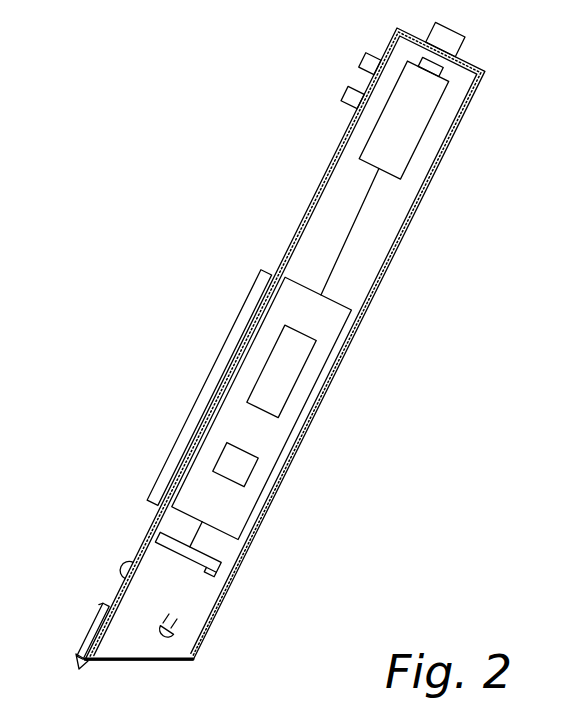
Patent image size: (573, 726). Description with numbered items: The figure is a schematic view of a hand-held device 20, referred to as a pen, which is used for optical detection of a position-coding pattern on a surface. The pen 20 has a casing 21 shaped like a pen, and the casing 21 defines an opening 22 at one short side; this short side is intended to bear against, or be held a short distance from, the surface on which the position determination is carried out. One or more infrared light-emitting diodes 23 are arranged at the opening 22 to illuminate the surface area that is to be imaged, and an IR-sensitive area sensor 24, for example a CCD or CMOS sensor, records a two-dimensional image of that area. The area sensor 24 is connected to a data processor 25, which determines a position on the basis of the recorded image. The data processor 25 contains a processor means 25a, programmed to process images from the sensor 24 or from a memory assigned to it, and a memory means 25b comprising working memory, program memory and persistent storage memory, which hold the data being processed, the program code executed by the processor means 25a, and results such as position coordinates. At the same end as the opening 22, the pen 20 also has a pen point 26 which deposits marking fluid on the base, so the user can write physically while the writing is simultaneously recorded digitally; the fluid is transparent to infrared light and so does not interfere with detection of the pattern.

The hand-held device 20 is at (263, 351).
The casing 21 is at (389, 268).
The opening 22 is at (128, 664).
The infrared light-emitting diode 23 is at (173, 639).
The IR-sensitive area sensor 24 is at (210, 560).
The data processor 25 is at (330, 325).
The processor means 25a is at (284, 388).
The memory means 25b is at (244, 476).
The pen point 26 is at (93, 620).